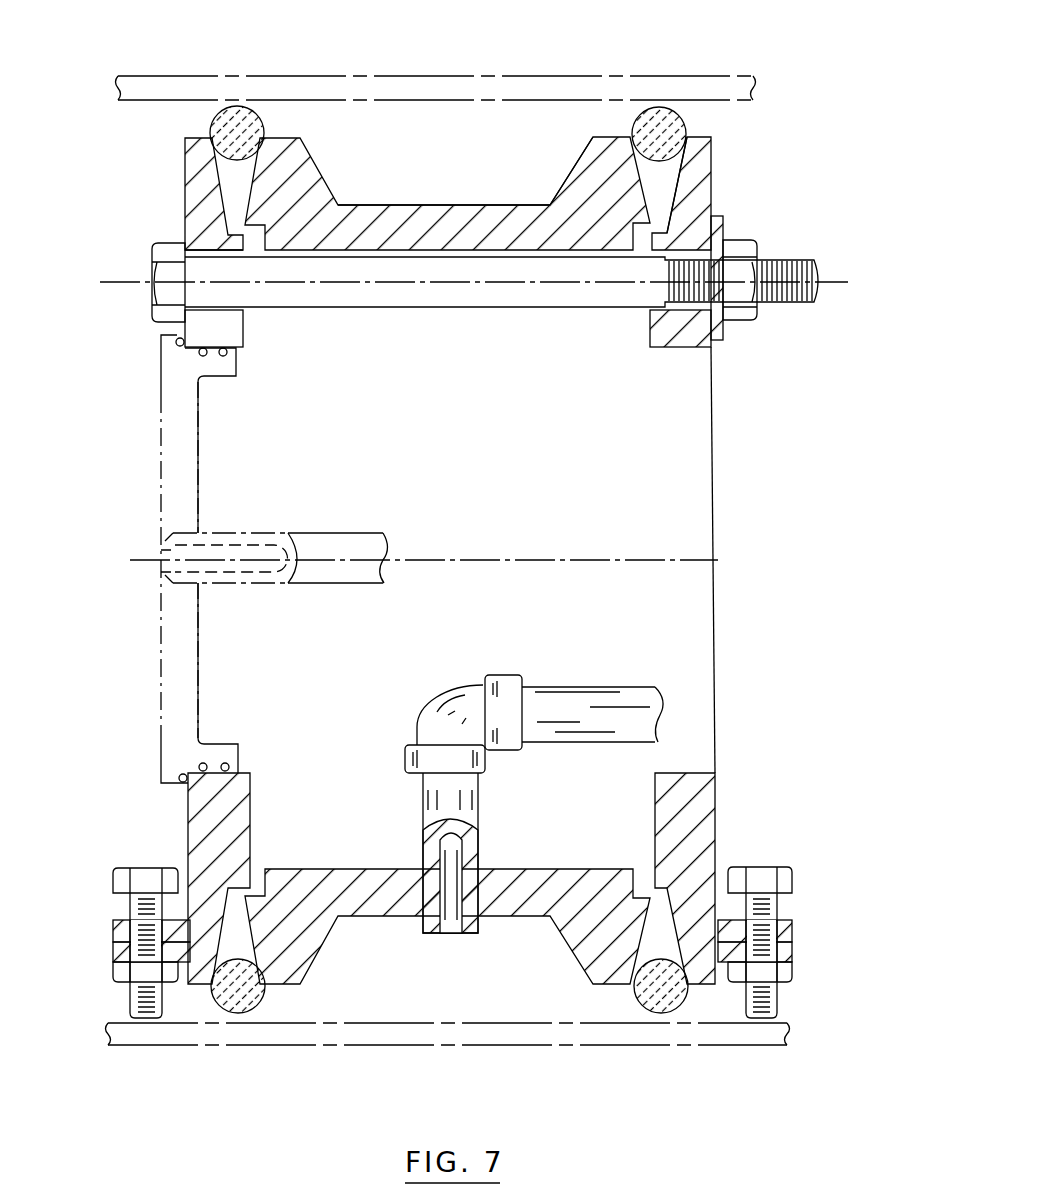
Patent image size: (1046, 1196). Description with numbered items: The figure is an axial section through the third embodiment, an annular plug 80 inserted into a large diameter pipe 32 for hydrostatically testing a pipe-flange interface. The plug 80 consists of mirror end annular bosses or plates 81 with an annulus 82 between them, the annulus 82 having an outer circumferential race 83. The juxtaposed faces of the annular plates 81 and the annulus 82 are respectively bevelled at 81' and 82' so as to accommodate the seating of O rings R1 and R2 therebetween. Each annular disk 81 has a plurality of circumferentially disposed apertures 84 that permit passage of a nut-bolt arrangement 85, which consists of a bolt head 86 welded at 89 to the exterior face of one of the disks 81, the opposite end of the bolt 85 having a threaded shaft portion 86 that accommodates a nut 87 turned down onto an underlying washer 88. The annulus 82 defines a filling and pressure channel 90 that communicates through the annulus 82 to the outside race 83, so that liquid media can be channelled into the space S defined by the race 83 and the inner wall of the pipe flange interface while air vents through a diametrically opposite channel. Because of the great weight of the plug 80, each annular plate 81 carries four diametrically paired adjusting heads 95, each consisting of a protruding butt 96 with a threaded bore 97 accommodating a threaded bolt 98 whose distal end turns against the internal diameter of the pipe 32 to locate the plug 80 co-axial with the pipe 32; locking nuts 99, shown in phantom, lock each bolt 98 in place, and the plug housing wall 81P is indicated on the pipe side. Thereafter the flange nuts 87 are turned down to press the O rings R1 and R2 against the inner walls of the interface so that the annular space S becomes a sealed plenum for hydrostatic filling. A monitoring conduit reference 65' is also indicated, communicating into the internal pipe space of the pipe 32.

The pipe 32 is at (148, 88).
The annular plug 80 is at (469, 124).
The annular plate 81 is at (445, 551).
The bevelled face of annular plate 81' is at (737, 185).
The housing wall 81P is at (180, 450).
The annulus 82 is at (447, 501).
The bevelled face of annulus 82' is at (561, 171).
The outer circumferential race 83 is at (395, 203).
The aperture 84 is at (232, 307).
The nut-bolt arrangement 85 is at (480, 297).
The bolt head 86 is at (160, 287).
The nut 87 is at (742, 250).
The washer 88 is at (722, 220).
The weld 89 is at (187, 238).
The filling and pressure channel 90 is at (468, 850).
The adjusting head 95 is at (92, 972).
The protruding butt 96 is at (787, 952).
The threaded bore 97 is at (787, 932).
The threaded bolt 98 is at (757, 875).
The nut 99 is at (783, 968).
The O ring R1 is at (665, 128).
The O ring R2 is at (236, 123).
The monitoring conduit 65' is at (276, 516).
The space S is at (460, 1001).